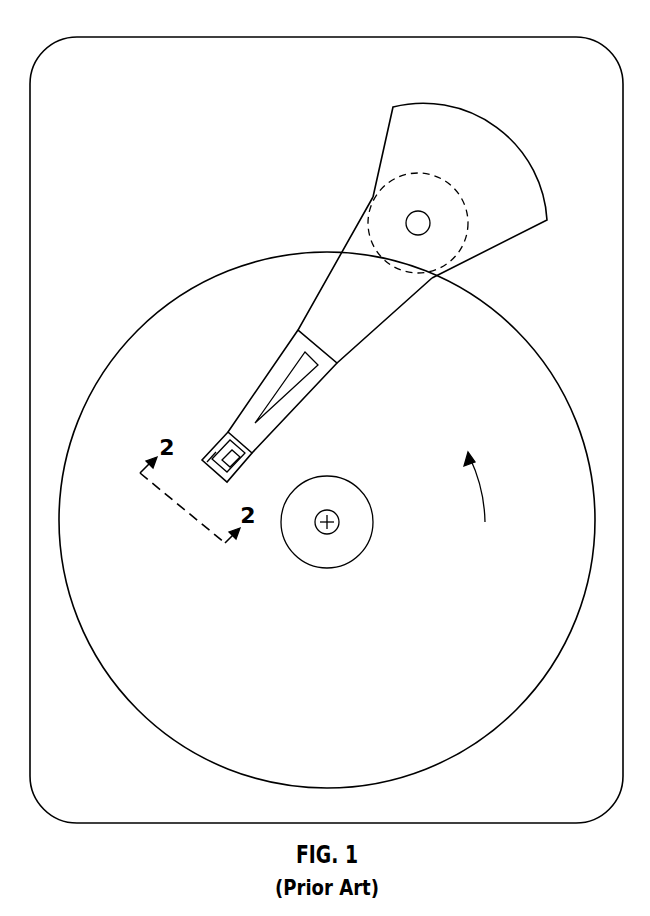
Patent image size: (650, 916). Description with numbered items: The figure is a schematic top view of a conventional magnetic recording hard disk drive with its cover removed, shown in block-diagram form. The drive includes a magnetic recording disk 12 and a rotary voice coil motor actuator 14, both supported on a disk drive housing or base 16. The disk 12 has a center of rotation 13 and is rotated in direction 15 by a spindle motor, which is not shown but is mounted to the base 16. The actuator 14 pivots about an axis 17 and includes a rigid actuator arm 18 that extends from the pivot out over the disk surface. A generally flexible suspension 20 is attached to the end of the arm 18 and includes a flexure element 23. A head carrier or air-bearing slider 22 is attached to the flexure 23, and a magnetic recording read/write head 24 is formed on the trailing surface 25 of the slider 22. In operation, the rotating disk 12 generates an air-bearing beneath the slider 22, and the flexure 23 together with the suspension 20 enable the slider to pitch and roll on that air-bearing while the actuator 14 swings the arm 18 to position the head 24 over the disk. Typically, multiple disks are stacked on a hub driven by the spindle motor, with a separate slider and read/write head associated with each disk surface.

The magnetic recording disk 12 is at (310, 714).
The center of rotation 13 is at (338, 514).
The rotary voice coil motor (VCM) actuator 14 is at (497, 123).
The direction of rotation 15 is at (483, 497).
The disk drive housing or base 16 is at (528, 37).
The pivot axis 17 is at (408, 222).
The rigid actuator arm 18 is at (323, 294).
The suspension 20 is at (291, 357).
The air-bearing slider 22 is at (222, 437).
The flexure element 23 is at (236, 462).
The magnetic recording read/write head 24 is at (232, 475).
The trailing surface 25 is at (208, 467).